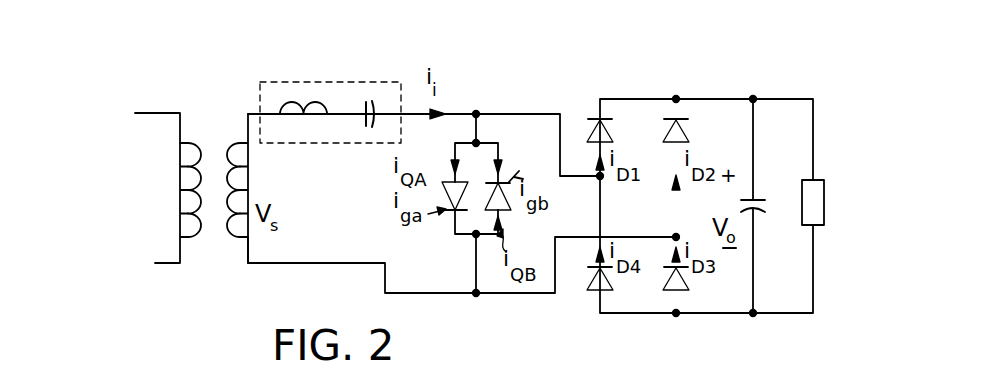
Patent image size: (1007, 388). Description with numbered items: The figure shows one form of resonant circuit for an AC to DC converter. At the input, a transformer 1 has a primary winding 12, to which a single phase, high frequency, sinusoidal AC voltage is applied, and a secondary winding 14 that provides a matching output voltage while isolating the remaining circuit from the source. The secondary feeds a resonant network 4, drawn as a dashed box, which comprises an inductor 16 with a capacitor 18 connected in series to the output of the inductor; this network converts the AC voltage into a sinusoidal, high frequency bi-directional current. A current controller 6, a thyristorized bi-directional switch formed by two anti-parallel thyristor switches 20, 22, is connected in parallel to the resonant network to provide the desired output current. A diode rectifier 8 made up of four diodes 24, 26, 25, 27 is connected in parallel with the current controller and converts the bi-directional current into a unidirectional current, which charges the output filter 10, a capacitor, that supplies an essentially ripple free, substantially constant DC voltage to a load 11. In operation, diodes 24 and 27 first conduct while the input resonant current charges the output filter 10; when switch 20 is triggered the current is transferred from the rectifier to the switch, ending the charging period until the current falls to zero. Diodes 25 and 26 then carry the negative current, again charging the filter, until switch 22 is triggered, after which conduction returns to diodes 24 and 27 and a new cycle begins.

The input transformer 1 is at (215, 241).
The primary winding 12 is at (190, 140).
The secondary winding 14 is at (238, 135).
The resonant network 4 is at (330, 76).
The inductor 16 is at (285, 102).
The capacitor 18 is at (374, 104).
The current controller 6 is at (485, 150).
The thyristor switch 20 is at (430, 165).
The thyristor switch 22 is at (503, 172).
The diode rectifier 8 is at (641, 122).
The diode 24 is at (592, 128).
The diode 26 is at (672, 130).
The diode 25 is at (592, 288).
The diode 27 is at (670, 290).
The output filter 10 is at (740, 158).
The load 11 is at (818, 226).